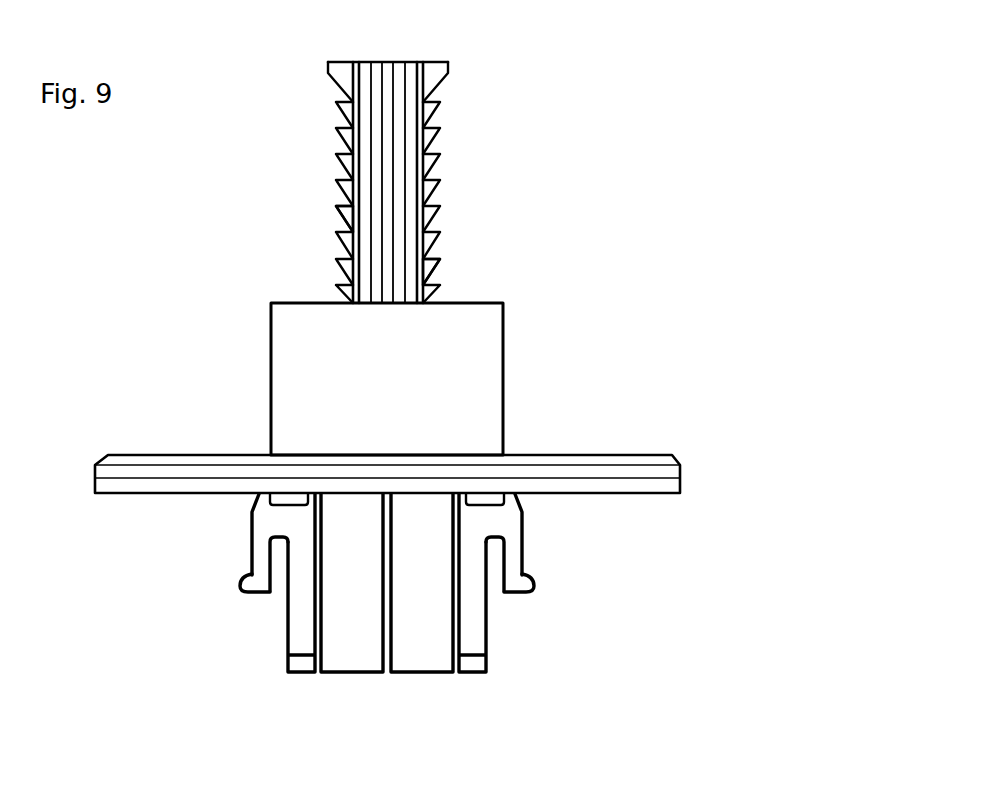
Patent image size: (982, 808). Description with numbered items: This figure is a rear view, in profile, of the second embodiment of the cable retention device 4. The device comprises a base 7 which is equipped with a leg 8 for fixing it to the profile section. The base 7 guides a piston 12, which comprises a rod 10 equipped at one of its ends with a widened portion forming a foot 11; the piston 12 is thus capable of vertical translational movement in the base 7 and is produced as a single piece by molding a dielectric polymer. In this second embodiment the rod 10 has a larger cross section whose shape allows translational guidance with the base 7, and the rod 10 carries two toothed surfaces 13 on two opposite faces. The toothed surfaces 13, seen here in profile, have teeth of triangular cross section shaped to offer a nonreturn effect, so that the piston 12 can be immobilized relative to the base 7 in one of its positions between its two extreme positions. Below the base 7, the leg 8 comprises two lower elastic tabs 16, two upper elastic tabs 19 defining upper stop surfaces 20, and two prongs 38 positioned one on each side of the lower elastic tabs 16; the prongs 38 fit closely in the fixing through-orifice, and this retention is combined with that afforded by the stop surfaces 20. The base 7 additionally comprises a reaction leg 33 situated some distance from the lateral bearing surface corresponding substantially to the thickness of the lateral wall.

The cable retention device 4 is at (575, 204).
The base 7 is at (490, 397).
The leg 8 is at (500, 621).
The rod 10 is at (388, 73).
The foot 11 is at (160, 488).
The piston 12 is at (450, 175).
The toothed surface 13 is at (338, 213).
The lower elastic tab 16 is at (424, 660).
The upper elastic tab 19 is at (250, 560).
The upper stop surface 20 is at (251, 602).
The reaction leg 33 is at (278, 502).
The prong 38 is at (298, 634).